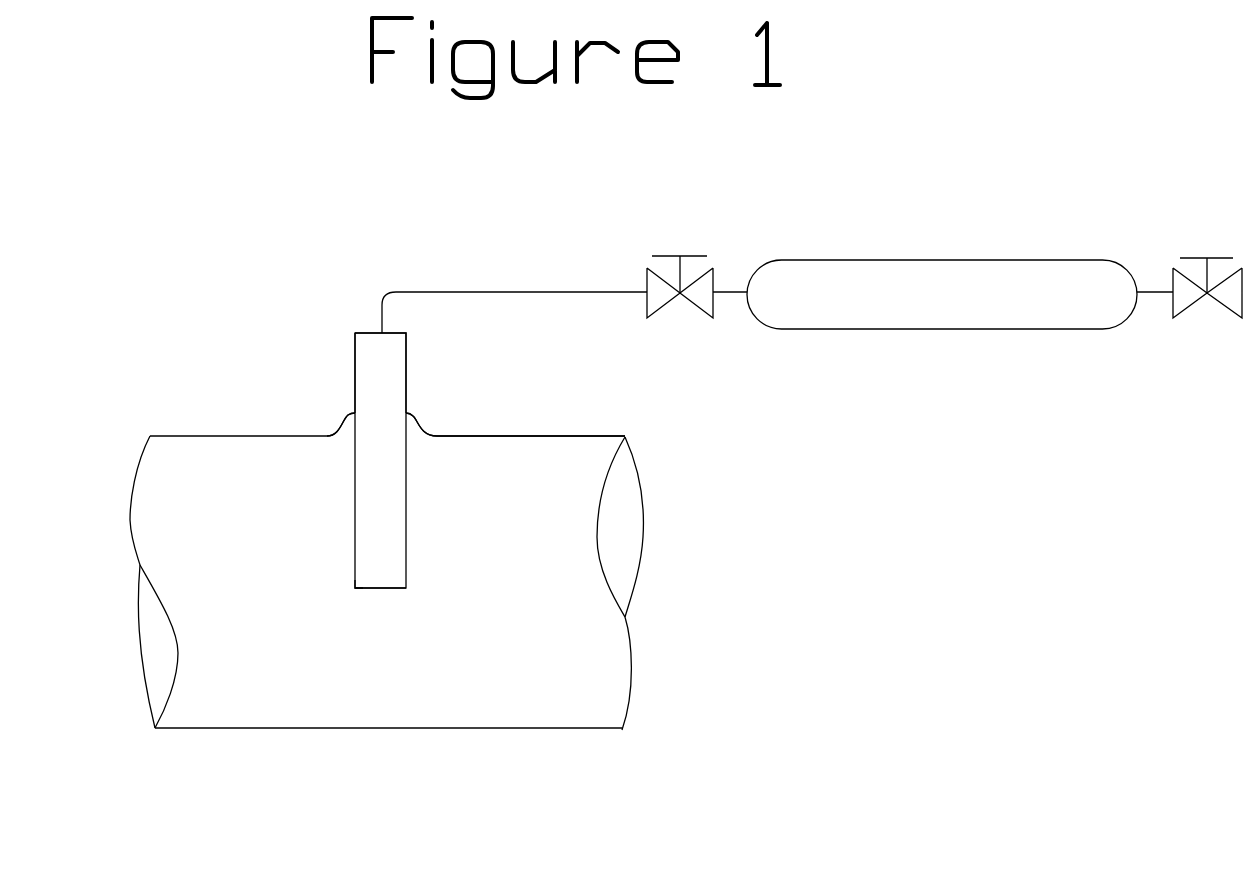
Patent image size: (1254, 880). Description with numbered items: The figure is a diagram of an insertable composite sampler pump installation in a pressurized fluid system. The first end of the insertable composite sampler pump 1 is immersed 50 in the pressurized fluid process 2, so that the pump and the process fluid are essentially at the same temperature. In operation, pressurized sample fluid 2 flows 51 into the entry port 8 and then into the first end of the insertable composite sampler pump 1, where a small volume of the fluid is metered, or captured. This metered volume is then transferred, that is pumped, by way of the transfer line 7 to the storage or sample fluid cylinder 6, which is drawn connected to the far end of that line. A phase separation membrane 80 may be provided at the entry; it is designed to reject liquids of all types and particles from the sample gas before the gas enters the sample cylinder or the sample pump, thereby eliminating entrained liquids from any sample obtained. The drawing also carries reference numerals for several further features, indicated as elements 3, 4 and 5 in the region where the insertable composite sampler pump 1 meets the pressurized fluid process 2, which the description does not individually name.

The insertable composite sampler pump 1 is at (368, 553).
The pressurized fluid process 2 is at (528, 662).
The body top surface 3 is at (600, 423).
The probe upper portion 4 is at (352, 348).
The seal region 5 is at (435, 387).
The sample fluid cylinder 6 is at (905, 253).
The transfer line 7 is at (448, 280).
The entry port 8 is at (380, 590).
The immersion 50 is at (428, 440).
The sample fluid flow 51 is at (390, 590).
The phase separation membrane 80 is at (356, 590).